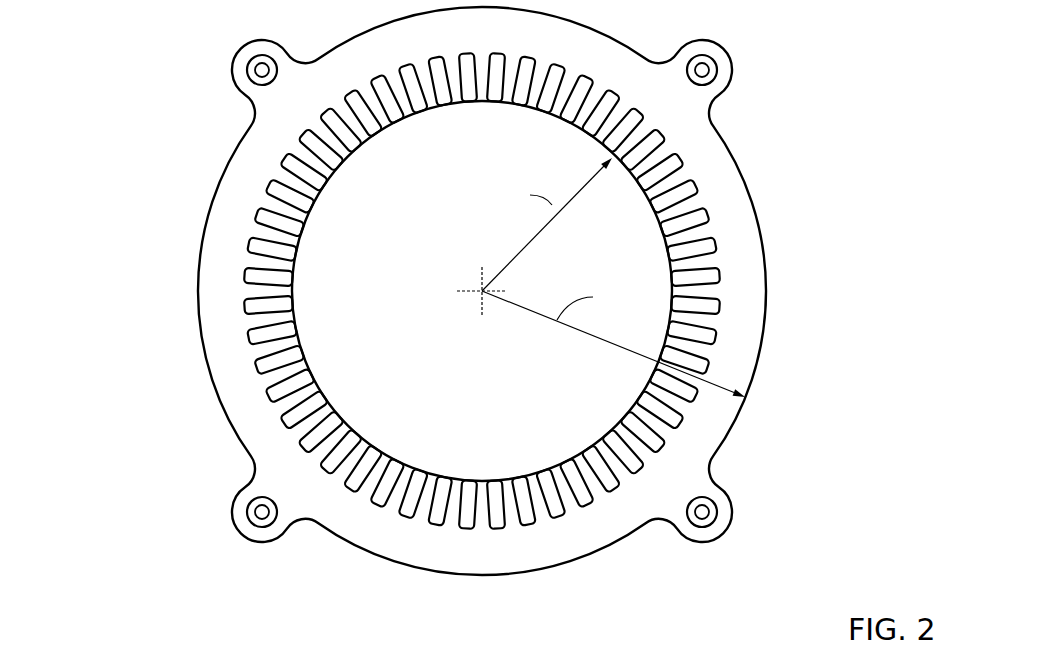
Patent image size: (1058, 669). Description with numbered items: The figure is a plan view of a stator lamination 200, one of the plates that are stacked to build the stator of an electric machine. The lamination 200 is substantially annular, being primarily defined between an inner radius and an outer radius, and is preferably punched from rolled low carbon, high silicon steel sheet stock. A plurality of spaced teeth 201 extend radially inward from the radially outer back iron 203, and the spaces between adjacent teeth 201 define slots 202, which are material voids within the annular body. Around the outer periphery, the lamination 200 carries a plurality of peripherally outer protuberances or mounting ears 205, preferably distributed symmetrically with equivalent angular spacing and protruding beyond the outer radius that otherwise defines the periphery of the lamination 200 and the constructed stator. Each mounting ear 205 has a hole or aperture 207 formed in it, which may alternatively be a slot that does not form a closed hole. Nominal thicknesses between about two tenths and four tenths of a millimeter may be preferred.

The stator lamination 200 is at (162, 216).
The teeth 201 is at (405, 112).
The slots 202 is at (308, 202).
The back iron 203 is at (728, 213).
The mounting ears 205 is at (242, 45).
The aperture 207 is at (250, 80).